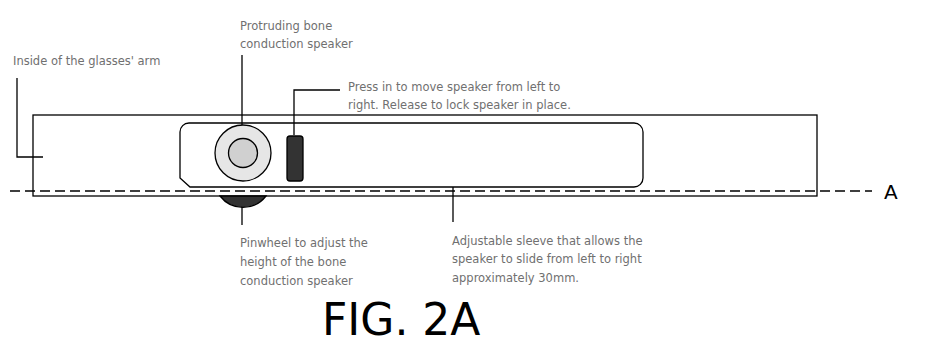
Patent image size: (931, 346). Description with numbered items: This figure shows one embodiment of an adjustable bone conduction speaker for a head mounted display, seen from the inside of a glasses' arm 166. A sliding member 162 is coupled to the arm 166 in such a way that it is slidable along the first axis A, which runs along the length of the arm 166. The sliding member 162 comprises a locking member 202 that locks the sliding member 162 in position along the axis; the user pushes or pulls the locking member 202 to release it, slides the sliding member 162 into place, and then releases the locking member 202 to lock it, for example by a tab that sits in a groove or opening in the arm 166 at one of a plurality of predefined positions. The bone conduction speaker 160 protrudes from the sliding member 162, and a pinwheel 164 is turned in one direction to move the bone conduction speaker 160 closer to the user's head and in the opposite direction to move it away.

The bone conduction speaker 160 is at (217, 163).
The sliding member 162 is at (192, 142).
The pinwheel 164 is at (226, 204).
The arm 166 is at (746, 165).
The locking member 202 is at (303, 161).